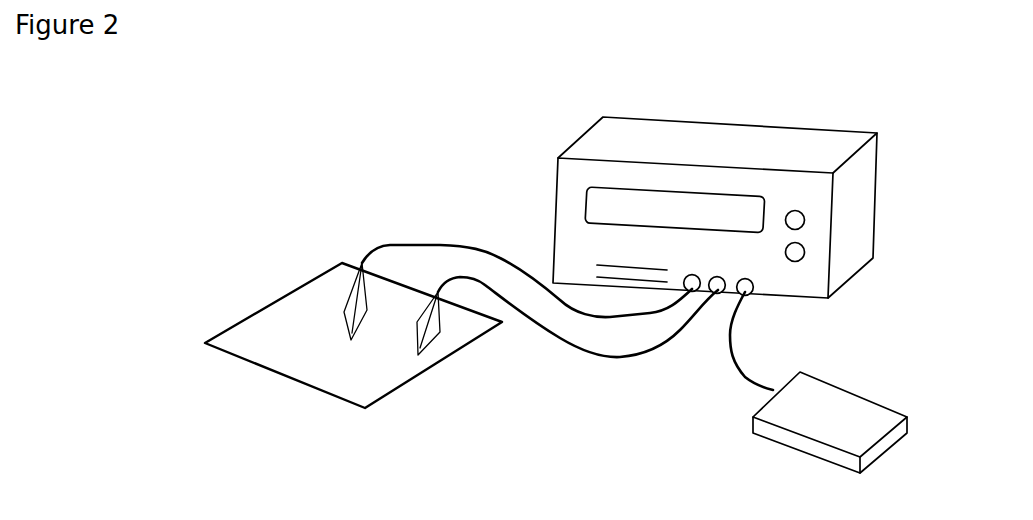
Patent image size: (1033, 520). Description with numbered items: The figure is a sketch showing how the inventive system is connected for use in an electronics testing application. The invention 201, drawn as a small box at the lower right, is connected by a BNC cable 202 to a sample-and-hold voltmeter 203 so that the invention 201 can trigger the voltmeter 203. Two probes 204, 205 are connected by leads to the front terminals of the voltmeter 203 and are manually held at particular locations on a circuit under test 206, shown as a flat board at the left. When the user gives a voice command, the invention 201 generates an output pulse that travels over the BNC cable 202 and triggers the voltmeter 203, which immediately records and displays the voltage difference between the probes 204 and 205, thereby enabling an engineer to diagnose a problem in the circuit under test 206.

The invention 201 is at (800, 452).
The BNC cable 202 is at (735, 352).
The sample-and-hold voltmeter 203 is at (605, 124).
The probe 204 is at (352, 285).
The probe 205 is at (423, 295).
The circuit under test 206 is at (228, 328).